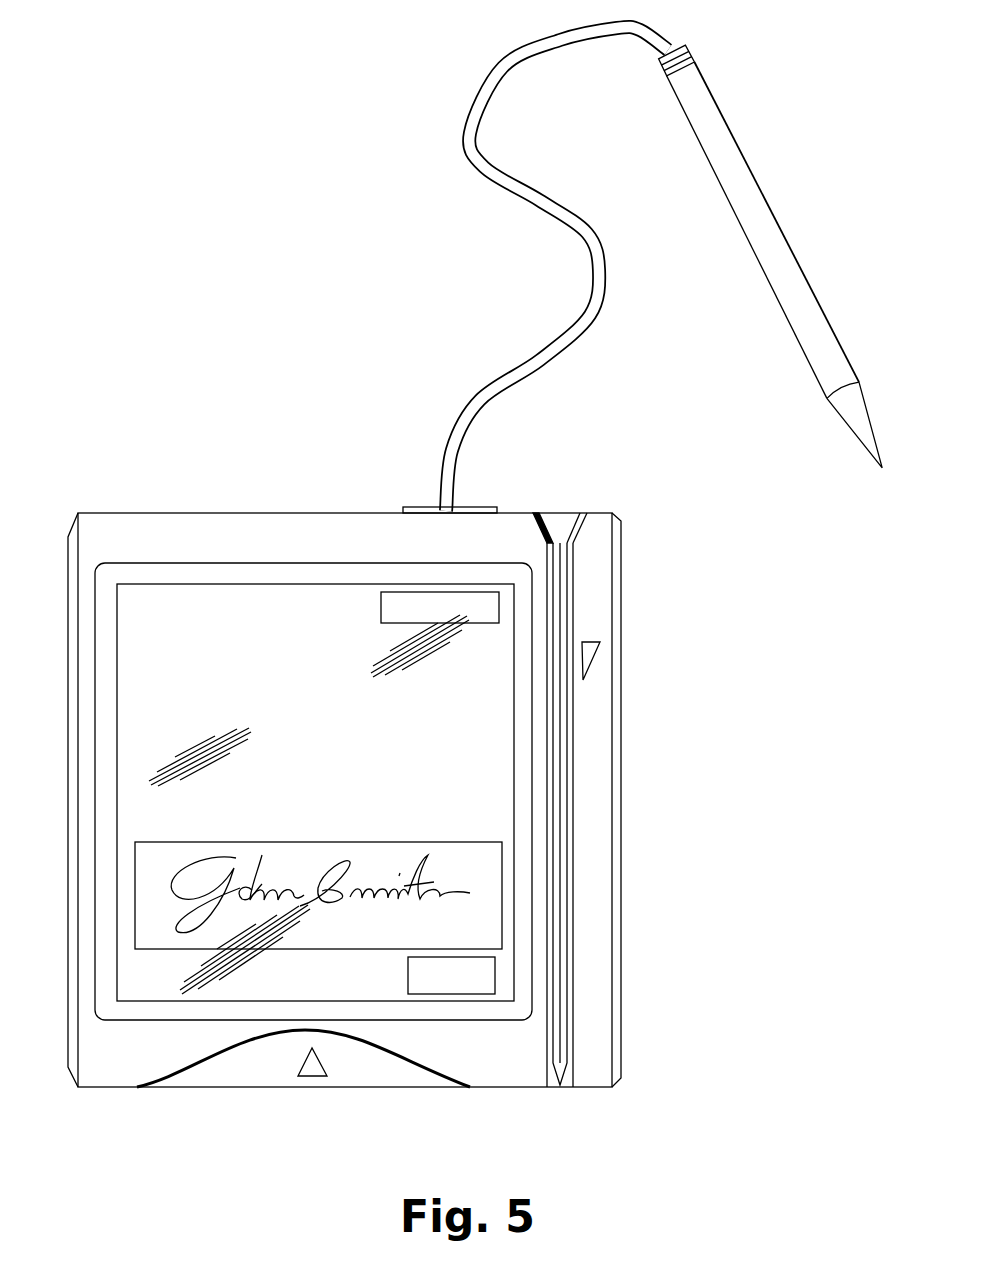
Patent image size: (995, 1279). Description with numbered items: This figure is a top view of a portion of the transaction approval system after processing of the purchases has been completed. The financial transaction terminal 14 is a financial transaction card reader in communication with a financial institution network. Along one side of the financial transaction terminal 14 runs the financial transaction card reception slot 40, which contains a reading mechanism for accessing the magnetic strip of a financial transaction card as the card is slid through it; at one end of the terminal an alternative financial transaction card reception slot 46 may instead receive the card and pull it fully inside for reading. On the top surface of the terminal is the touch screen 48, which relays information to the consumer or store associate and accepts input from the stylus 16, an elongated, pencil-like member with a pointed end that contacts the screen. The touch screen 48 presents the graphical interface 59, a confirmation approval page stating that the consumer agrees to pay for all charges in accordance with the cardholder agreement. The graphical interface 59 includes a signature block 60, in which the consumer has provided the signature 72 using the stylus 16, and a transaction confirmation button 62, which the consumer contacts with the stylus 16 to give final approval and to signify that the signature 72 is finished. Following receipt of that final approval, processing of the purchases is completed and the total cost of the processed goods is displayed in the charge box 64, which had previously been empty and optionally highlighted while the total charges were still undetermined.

The financial transaction terminal 14 is at (182, 500).
The stylus 16 is at (818, 325).
The financial transaction card reception slot 40 is at (560, 522).
The alternative financial transaction card reception slot 46 is at (383, 1045).
The touch screen 48 is at (485, 790).
The graphical interface 59 is at (145, 790).
The signature block 60 is at (153, 897).
The transaction confirmation button 62 is at (488, 979).
The charge box 64 is at (477, 592).
The signature 72 is at (473, 896).